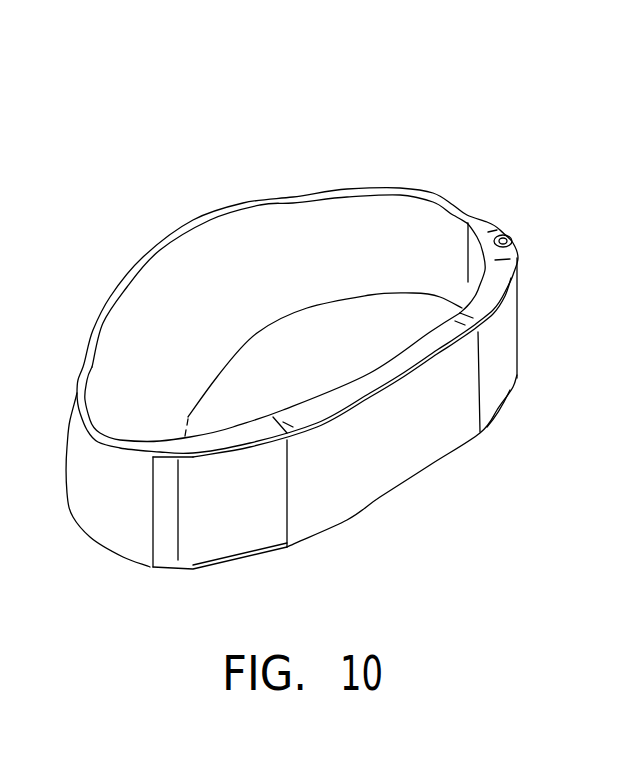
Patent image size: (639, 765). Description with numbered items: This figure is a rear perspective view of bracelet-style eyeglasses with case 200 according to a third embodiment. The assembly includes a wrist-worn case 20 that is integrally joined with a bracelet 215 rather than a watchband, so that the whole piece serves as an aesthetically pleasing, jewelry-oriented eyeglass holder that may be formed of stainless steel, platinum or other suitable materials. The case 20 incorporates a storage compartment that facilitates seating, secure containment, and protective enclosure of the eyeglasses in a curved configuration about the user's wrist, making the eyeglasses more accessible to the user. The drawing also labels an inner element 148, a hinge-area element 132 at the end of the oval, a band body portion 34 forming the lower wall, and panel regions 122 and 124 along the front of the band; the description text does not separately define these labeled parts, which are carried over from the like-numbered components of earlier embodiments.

The bracelet-style eyeglasses with case 200 is at (470, 127).
The wrist-worn case 20 is at (638, 102).
The bracelet 215 is at (355, 185).
The inner liner 148 is at (462, 222).
The hinge pin 132 is at (512, 240).
The band body 34 is at (390, 456).
The first panel 122 is at (258, 433).
The second panel 124 is at (253, 557).